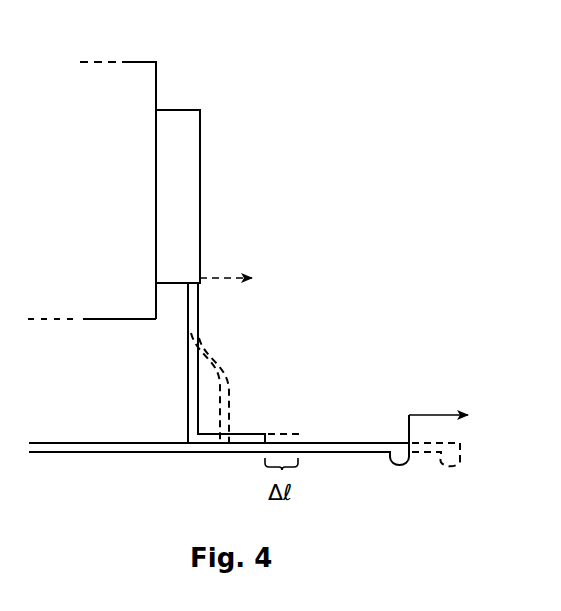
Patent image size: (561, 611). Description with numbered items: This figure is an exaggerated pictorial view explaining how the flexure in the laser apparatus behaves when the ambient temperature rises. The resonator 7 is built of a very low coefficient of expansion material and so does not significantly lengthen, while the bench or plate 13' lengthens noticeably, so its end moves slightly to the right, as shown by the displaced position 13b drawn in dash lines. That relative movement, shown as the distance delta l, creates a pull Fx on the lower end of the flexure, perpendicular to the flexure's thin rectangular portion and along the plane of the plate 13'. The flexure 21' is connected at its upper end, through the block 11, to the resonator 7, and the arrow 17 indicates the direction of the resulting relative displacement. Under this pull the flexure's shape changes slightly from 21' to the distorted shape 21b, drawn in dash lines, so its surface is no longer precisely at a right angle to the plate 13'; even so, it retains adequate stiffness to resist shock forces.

The resonator 7 is at (184, 71).
The holding block 11 is at (188, 153).
The direction of displacement 17 is at (239, 339).
The spring strip 21' is at (217, 363).
The distorted flexure shape 21b is at (232, 414).
The base plate 13' is at (248, 425).
The displaced base plate end 13b is at (453, 464).